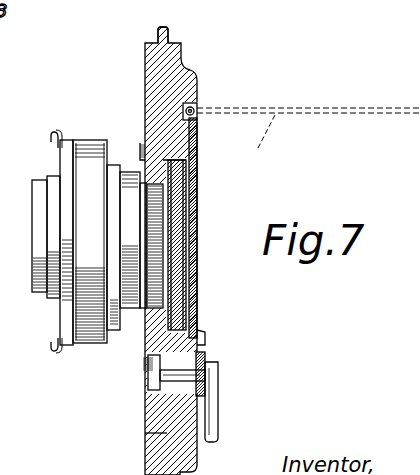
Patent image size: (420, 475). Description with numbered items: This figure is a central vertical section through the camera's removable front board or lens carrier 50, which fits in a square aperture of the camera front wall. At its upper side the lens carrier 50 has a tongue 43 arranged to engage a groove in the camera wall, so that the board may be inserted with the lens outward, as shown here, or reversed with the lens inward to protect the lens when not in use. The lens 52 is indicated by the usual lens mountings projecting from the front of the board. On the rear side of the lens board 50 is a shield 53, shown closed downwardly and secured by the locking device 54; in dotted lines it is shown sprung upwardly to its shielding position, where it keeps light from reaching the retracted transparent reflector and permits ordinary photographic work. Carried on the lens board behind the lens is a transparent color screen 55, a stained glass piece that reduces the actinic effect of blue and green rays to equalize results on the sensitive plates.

The tongue 43 is at (169, 27).
The front board or lens carrier 50 is at (163, 433).
The lens 52 is at (86, 160).
The shield 53 is at (199, 198).
The locking device 54 is at (216, 366).
The transparent color screen 55 is at (180, 287).